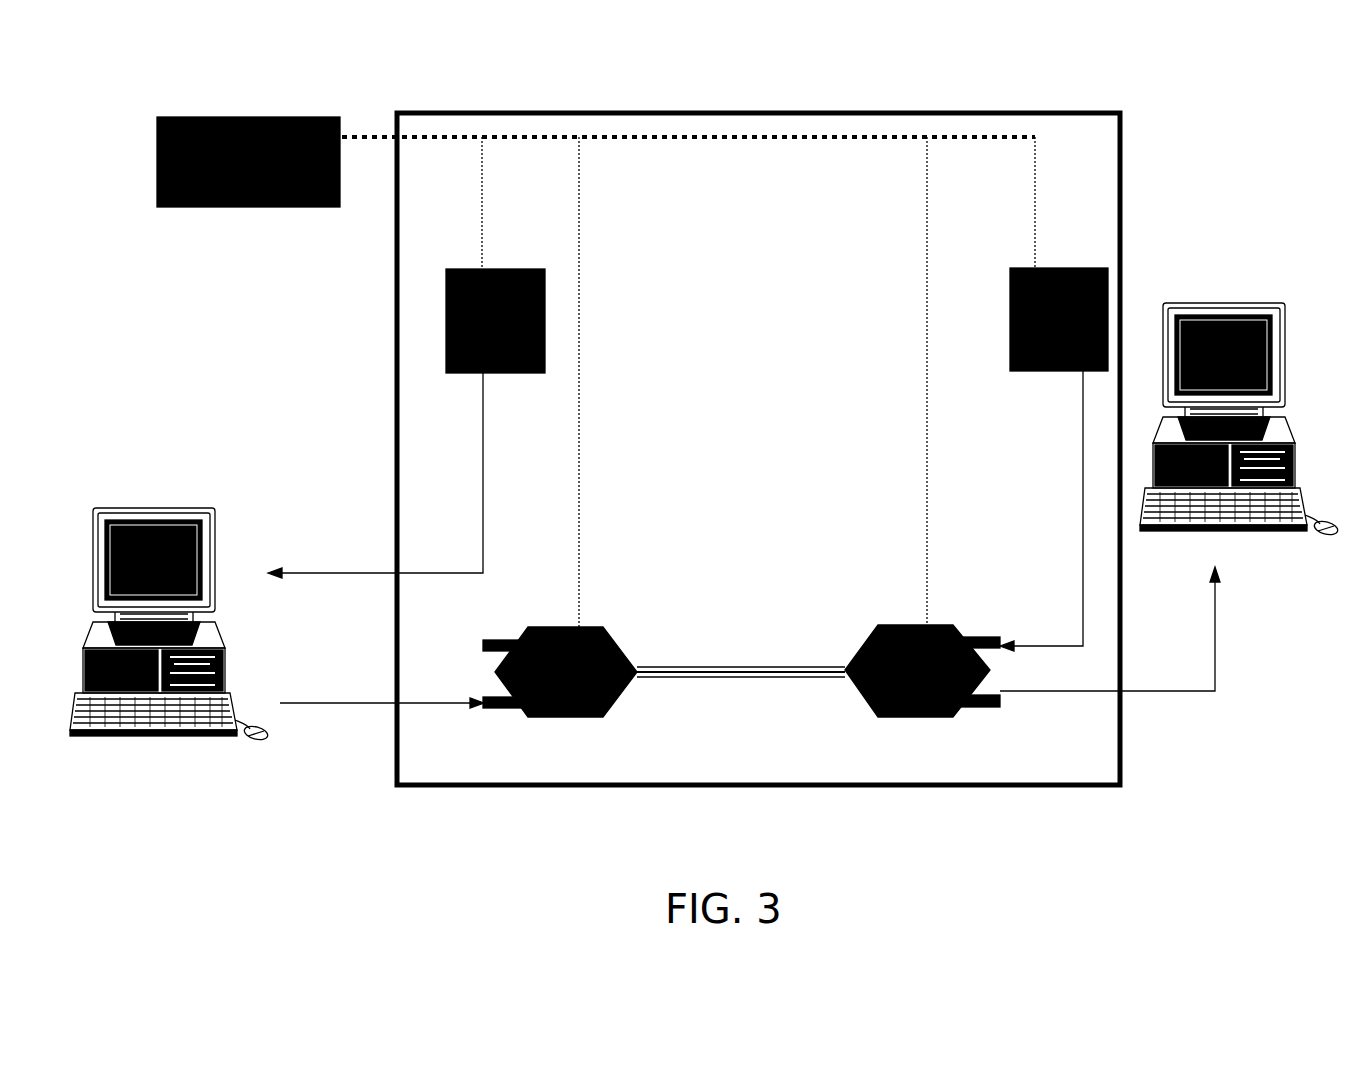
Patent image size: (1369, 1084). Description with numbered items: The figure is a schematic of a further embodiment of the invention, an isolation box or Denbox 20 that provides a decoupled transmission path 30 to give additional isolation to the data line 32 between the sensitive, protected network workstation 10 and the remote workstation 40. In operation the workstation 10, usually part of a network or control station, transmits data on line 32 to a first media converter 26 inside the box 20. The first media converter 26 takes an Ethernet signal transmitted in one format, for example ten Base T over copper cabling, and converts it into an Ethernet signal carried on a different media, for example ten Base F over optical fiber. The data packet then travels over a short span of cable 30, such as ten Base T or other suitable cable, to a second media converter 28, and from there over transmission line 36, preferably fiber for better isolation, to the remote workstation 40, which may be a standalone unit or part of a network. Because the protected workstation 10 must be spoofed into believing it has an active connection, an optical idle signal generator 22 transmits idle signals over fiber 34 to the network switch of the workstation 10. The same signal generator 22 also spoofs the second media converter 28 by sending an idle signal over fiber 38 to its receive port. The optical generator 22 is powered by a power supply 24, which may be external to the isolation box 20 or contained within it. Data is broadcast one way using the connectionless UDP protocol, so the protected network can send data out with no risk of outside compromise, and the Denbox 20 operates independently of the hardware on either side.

The workstation 10 is at (160, 757).
The isolation box 20 is at (645, 812).
The optical idle signal generator 22 is at (446, 327).
The power supply 24 is at (292, 207).
The first media converter 26 is at (567, 717).
The second media converter 28 is at (923, 717).
The decoupled transmission path 30 is at (755, 673).
The data line 32 is at (388, 705).
The fiber 34 is at (390, 573).
The transmission line 36 is at (1060, 691).
The fiber 38 is at (1083, 603).
The remote workstation 40 is at (1230, 278).